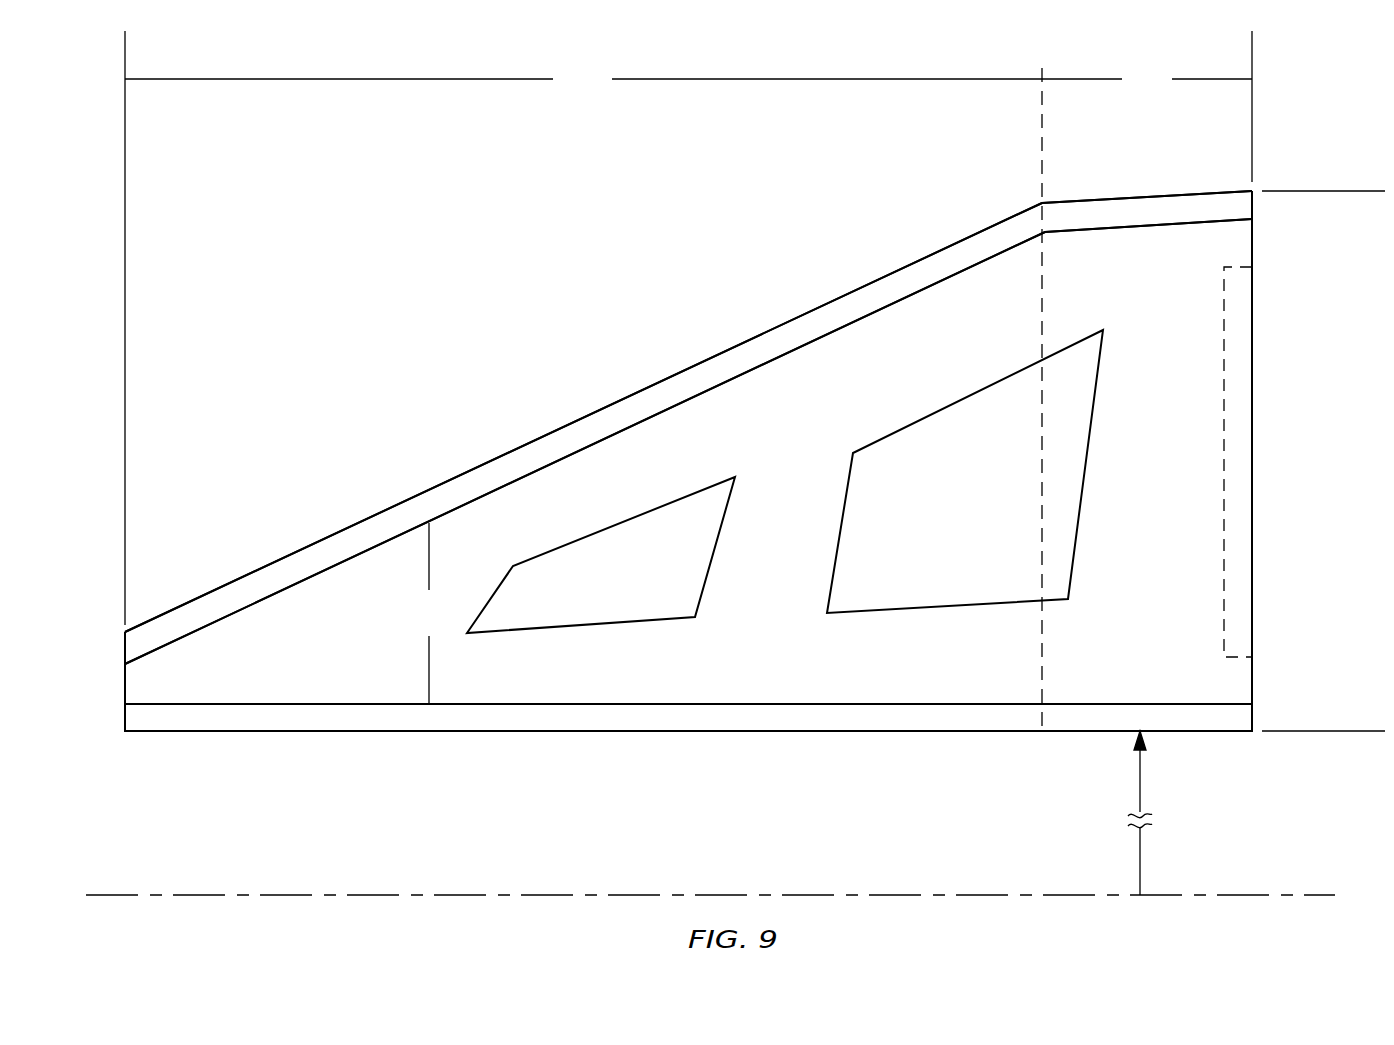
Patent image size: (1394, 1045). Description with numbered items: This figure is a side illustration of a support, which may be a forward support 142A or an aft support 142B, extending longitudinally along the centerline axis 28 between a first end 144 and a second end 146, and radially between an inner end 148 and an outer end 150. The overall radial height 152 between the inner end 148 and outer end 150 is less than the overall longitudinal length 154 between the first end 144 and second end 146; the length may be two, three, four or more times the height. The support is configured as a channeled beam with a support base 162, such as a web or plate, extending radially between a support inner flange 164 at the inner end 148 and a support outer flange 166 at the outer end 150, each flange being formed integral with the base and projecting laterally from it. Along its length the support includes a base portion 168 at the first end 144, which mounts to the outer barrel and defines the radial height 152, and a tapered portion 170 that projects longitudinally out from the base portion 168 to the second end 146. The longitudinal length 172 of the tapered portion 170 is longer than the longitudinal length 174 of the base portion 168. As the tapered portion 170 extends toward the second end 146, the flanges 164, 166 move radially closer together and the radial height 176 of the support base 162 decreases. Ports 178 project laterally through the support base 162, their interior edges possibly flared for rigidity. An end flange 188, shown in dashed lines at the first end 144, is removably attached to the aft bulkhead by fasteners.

The centerline axis 28 is at (1325, 895).
The forward support 142A is at (488, 362).
The aft support 142B is at (688, 441).
The first end 144 is at (1252, 677).
The second end 146 is at (125, 684).
The inner end 148 is at (1209, 731).
The outer end 150 is at (1177, 193).
The radial height 152 is at (1375, 191).
The longitudinal length 154 is at (1252, 43).
The support base 162 is at (1252, 240).
The support inner flange 164 is at (1123, 704).
The support outer flange 166 is at (1130, 232).
The base portion 168 is at (1113, 182).
The tapered portion 170 is at (880, 254).
The longitudinal length of the tapered portion 172 is at (583, 80).
The longitudinal length of the base portion 174 is at (1147, 80).
The radial height of the support base 176 is at (433, 613).
The ports 178 is at (631, 592).
The end flange 188 is at (1224, 515).